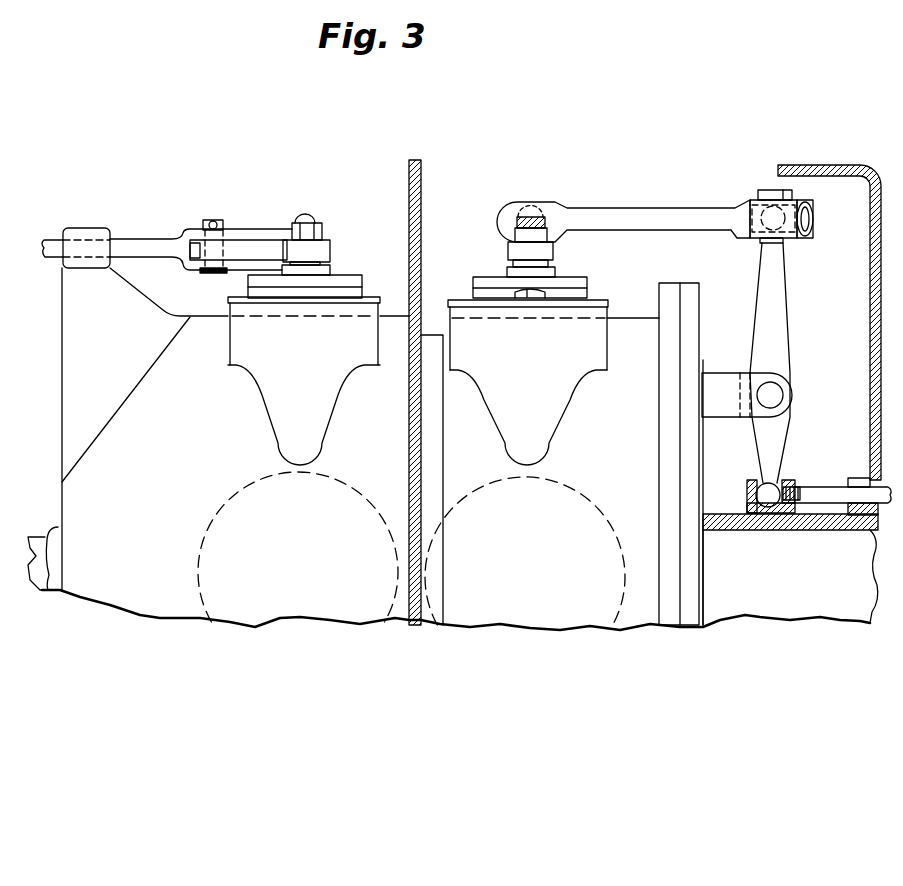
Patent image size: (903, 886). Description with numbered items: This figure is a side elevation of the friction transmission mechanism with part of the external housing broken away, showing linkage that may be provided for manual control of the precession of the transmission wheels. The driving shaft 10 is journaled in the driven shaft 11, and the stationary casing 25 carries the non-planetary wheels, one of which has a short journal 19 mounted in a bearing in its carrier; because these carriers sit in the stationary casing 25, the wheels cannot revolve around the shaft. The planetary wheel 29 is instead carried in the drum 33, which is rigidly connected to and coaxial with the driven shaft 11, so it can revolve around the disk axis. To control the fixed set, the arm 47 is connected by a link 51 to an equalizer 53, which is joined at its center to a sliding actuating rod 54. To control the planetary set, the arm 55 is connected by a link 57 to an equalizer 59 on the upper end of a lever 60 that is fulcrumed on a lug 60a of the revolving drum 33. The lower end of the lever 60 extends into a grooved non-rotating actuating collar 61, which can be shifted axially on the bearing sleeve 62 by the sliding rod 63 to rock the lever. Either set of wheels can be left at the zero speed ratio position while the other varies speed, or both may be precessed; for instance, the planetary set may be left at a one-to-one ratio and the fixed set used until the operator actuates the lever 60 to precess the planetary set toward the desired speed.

The driving shaft 10 is at (40, 537).
The driven shaft 11 is at (790, 577).
The short journal 19 is at (199, 572).
The casing 25 is at (235, 429).
The planetary friction wheel 29 is at (626, 612).
The drum 33 is at (625, 333).
The carrier arm 47 is at (327, 252).
The link 51 is at (270, 213).
The equalizer 53 is at (196, 252).
The sliding actuating rod 54 is at (152, 229).
The carrier arm 55 is at (549, 255).
The link 57 is at (640, 192).
The equalizer 59 is at (778, 223).
The lever 60 is at (771, 311).
The lug 60a is at (717, 387).
The actuating collar 61 is at (790, 485).
The bearing sleeve 62 is at (721, 517).
The sliding rod 63 is at (828, 497).